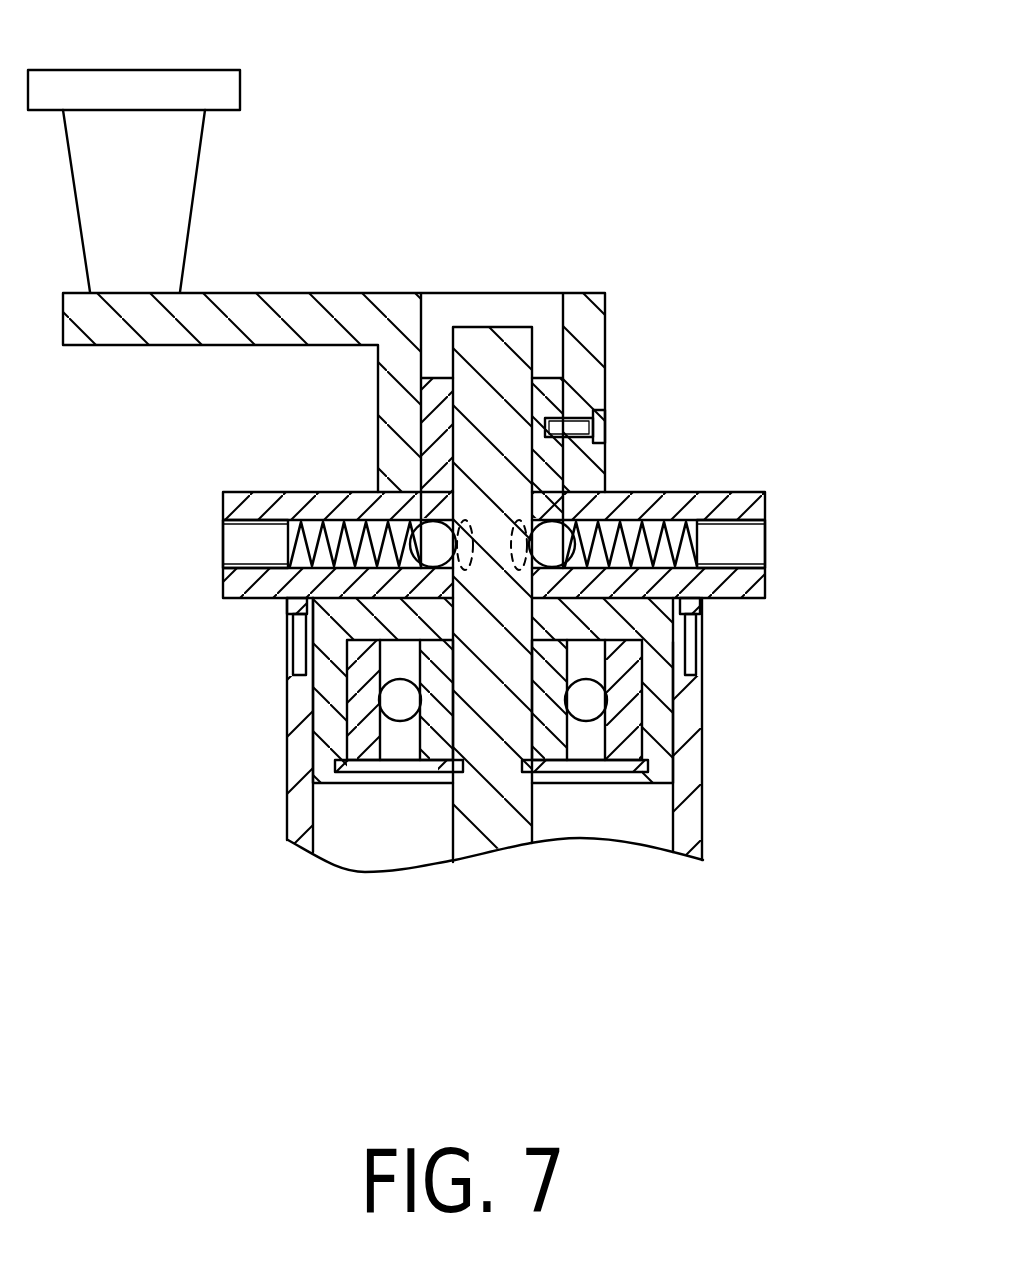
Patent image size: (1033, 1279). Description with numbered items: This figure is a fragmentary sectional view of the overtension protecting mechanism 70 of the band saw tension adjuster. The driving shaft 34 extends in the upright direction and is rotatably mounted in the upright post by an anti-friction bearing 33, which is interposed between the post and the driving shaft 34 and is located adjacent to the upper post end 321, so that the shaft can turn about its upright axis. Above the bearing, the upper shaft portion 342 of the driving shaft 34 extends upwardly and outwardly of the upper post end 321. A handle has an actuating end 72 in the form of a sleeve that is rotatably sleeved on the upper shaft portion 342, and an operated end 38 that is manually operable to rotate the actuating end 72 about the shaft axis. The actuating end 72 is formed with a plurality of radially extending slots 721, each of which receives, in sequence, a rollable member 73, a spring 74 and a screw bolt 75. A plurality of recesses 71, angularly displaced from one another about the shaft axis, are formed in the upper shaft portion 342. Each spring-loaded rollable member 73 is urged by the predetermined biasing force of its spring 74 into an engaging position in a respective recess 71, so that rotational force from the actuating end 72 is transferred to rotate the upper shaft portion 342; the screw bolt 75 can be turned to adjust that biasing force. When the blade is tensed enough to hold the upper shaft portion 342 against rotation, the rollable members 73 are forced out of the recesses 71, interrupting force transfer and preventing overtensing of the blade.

The operated end 38 is at (242, 88).
The upper shaft portion 342 is at (480, 342).
The actuating end 72 is at (640, 492).
The radially extending slots 721 is at (668, 492).
The overtension protecting mechanism 70 is at (742, 490).
The rollable member 73 is at (430, 537).
The screw bolt 75 is at (242, 542).
The spring 74 is at (300, 603).
The recesses 71 is at (300, 702).
The anti-friction bearing 33 is at (667, 728).
The upper post end 321 is at (685, 830).
The driving shaft 34 is at (458, 840).